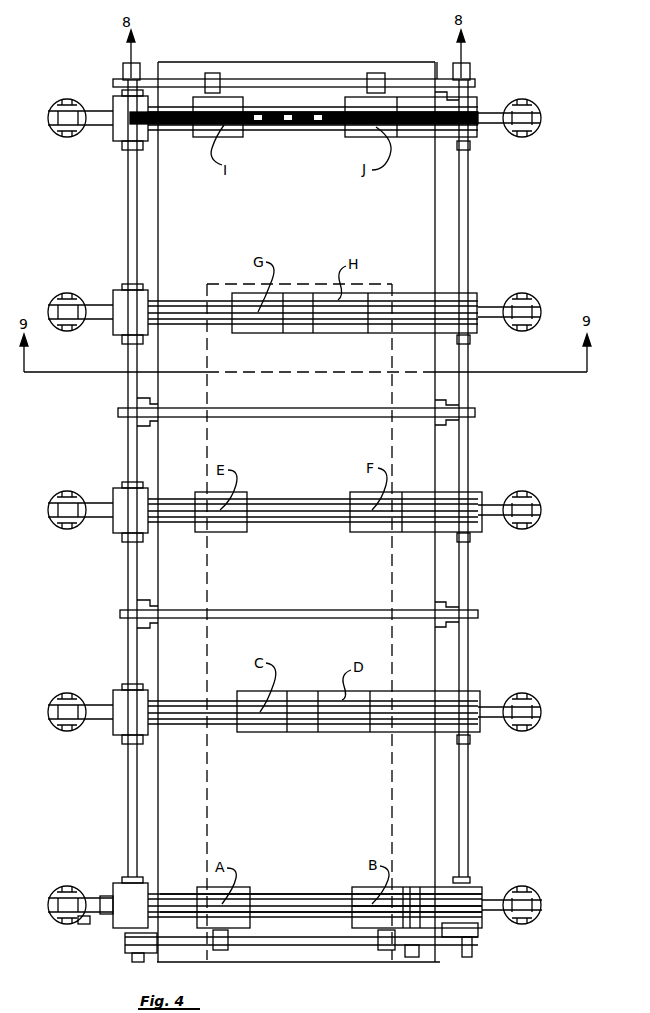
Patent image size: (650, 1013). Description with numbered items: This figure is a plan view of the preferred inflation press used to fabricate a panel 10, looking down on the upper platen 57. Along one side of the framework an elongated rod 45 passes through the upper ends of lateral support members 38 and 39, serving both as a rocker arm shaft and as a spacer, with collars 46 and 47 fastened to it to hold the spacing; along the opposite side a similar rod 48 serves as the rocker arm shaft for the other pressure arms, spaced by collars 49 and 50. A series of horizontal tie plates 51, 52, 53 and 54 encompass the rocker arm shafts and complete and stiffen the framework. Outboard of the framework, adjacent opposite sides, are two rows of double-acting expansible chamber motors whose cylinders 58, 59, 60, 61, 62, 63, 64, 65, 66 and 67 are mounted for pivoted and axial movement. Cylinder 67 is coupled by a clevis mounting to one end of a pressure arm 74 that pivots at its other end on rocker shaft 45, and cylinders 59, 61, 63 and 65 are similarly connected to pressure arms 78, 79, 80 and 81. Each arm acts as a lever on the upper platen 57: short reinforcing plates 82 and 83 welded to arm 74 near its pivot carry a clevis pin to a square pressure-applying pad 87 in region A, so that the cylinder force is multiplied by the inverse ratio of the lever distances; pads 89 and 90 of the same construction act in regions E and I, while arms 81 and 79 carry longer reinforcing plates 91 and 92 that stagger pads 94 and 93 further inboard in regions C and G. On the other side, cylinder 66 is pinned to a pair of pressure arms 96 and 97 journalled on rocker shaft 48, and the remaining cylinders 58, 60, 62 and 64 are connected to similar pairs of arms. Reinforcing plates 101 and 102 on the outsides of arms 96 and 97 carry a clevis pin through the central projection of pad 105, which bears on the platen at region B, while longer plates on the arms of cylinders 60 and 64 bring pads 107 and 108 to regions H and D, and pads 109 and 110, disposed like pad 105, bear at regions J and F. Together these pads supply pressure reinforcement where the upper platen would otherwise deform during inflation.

The panel 10 is at (209, 580).
The lateral support member 38 is at (120, 890).
The lateral support member 39 is at (112, 918).
The rod 45 is at (133, 823).
The collar 46 is at (128, 877).
The collar 47 is at (126, 940).
The rod 48 is at (466, 796).
The collar 49 is at (480, 931).
The collar 50 is at (478, 880).
The horizontal tie plate 51 is at (462, 948).
The horizontal tie plate 52 is at (478, 620).
The horizontal tie plate 53 is at (476, 415).
The horizontal tie plate 54 is at (305, 79).
The upper platen 57 is at (302, 202).
The cylinder 58 is at (52, 126).
The cylinder 59 is at (540, 118).
The cylinder 60 is at (68, 294).
The cylinder 61 is at (538, 298).
The cylinder 62 is at (70, 492).
The cylinder 63 is at (538, 495).
The cylinder 64 is at (70, 694).
The cylinder 65 is at (540, 699).
The cylinder 66 is at (58, 894).
The cylinder 67 is at (540, 893).
The pressure arm 74 is at (262, 906).
The pressure arm 78 is at (479, 110).
The pressure arm 79 is at (486, 308).
The pressure arm 80 is at (488, 505).
The pressure arm 81 is at (488, 707).
The reinforcing plate 82 is at (183, 913).
The reinforcing plate 83 is at (181, 900).
The pressure-applying pad 87 is at (242, 887).
The pressure-applying pad 89 is at (236, 533).
The pressure-applying pad 90 is at (201, 136).
The reinforcing plate 91 is at (183, 301).
The reinforcing plate 92 is at (190, 324).
The pressure-applying pad 93 is at (256, 333).
The pressure-applying pad 94 is at (258, 732).
The pressure arm 96 is at (84, 924).
The pressure arm 97 is at (94, 900).
The reinforcing plate 101 is at (362, 948).
The reinforcing plate 102 is at (424, 888).
The pressure-applying pad 105 is at (350, 892).
The pressure-applying pad 107 is at (330, 299).
The pressure-applying pad 108 is at (332, 696).
The pressure-applying pad 109 is at (351, 136).
The pressure-applying pad 110 is at (358, 532).